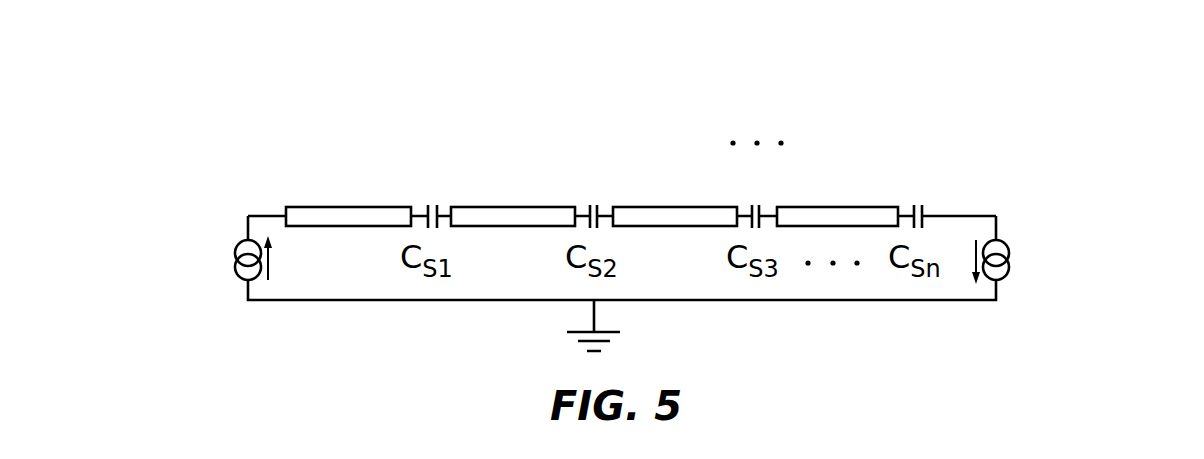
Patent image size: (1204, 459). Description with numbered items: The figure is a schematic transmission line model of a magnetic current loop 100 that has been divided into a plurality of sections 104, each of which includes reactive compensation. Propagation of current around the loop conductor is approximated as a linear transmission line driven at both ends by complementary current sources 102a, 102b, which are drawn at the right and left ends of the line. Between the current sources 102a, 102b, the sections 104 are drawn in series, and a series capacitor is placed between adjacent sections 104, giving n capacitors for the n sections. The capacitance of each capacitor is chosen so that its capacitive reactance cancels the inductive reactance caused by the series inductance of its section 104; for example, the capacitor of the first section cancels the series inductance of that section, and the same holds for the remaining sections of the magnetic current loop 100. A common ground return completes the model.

The magnetic current loop 100 is at (577, 105).
The complementary current source 102a is at (1010, 255).
The complementary current source 102b is at (233, 263).
The section 104 is at (370, 207).